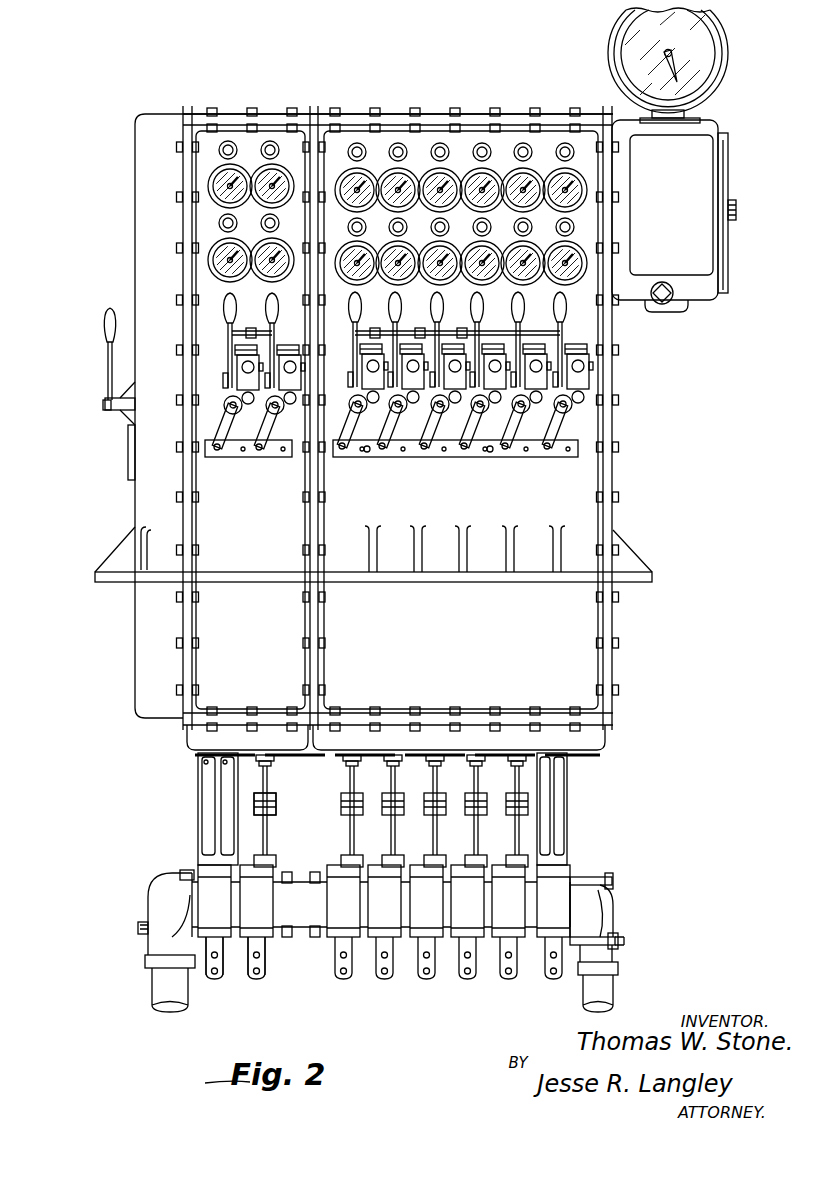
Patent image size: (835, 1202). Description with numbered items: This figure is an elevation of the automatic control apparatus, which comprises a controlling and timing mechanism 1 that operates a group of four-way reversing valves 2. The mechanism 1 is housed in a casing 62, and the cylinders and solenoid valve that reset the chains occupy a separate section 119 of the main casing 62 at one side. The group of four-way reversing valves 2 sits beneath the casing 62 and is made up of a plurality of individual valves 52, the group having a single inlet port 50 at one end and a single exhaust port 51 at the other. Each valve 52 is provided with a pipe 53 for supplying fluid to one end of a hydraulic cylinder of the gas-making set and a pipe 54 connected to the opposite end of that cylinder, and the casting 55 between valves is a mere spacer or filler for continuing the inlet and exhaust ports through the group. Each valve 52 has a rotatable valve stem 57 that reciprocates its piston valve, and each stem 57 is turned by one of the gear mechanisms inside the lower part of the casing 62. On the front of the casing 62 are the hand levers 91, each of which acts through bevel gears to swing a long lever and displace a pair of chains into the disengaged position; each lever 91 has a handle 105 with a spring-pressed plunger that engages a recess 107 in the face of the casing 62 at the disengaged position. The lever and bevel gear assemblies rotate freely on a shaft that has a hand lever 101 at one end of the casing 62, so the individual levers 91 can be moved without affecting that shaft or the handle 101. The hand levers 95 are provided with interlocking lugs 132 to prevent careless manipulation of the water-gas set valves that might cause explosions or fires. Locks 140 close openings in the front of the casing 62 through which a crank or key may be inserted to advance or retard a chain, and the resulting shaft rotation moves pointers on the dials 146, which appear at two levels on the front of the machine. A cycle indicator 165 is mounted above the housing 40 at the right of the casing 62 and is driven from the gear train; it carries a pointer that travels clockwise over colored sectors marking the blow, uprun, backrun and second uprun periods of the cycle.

The controlling and timing mechanism 1 is at (100, 606).
The group of four-way reversing valves 2 is at (150, 870).
The separate section of the main casing 119 is at (160, 128).
The casing 62 is at (232, 126).
The cycle indicator 165 is at (628, 50).
The gauge housing box 40 is at (674, 216).
The lock 140 is at (443, 145).
The dial 146 is at (520, 180).
The hand lever 95 is at (274, 336).
The interlocking lug 132 is at (251, 330).
The hand lever 101 is at (107, 380).
The hand lever 91 is at (222, 452).
The handle 105 is at (424, 457).
The recess 107 is at (367, 455).
The rotatable valve stem 57 is at (350, 838).
The casting 55 is at (290, 882).
The individual valve 52 is at (258, 920).
The pipe 53 is at (336, 942).
The pipe 54 is at (338, 970).
The inlet port 50 is at (150, 940).
The exhaust port 51 is at (612, 950).